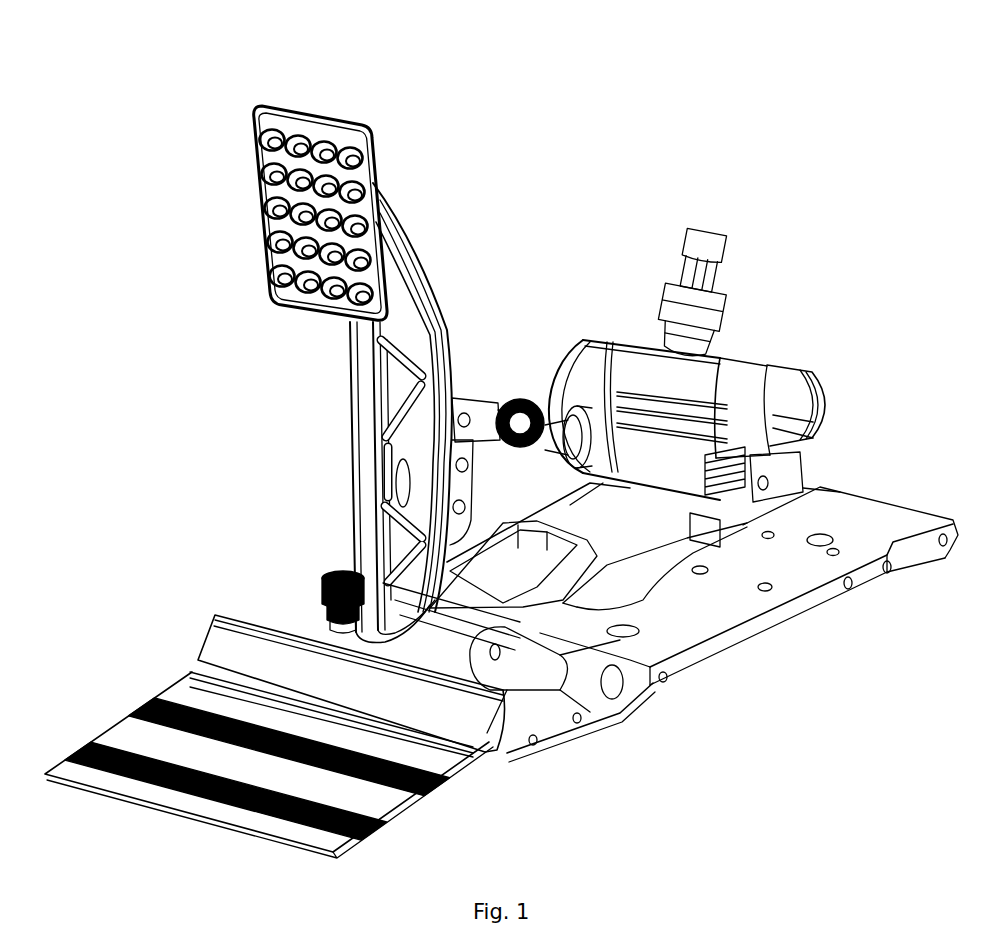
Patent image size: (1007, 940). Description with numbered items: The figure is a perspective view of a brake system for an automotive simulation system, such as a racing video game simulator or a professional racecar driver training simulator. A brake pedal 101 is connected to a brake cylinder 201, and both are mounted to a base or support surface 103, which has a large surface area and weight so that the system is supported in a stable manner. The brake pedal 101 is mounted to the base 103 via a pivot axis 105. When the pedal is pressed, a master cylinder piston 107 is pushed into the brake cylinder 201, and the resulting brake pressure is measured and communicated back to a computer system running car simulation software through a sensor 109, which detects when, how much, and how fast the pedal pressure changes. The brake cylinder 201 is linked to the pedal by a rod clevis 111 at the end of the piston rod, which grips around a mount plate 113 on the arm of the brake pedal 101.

The brake pedal 101 is at (333, 121).
The base 103 is at (677, 667).
The pivot axis 105 is at (418, 628).
The master cylinder piston 107 is at (572, 405).
The sensor 109 is at (703, 233).
The clevis / linkage 111 is at (483, 417).
The mount plate 113 is at (474, 463).
The brake cylinder 201 is at (703, 370).